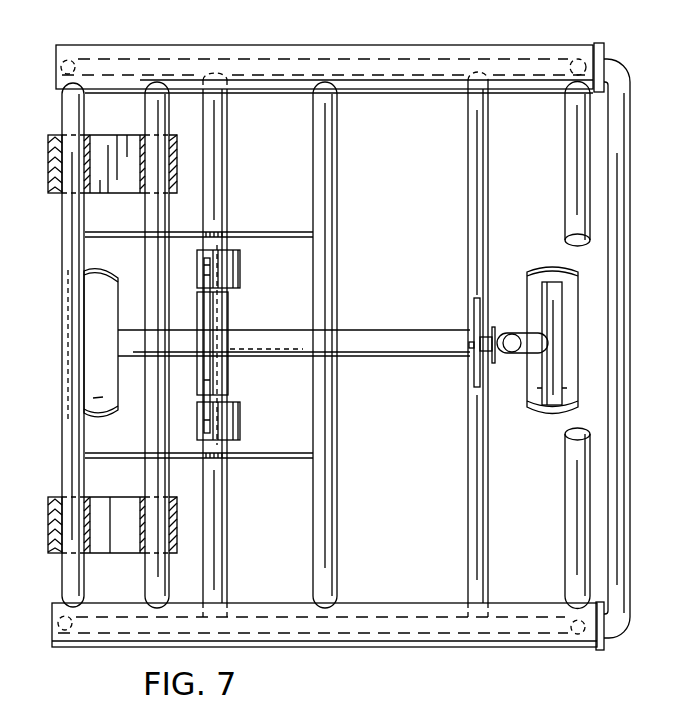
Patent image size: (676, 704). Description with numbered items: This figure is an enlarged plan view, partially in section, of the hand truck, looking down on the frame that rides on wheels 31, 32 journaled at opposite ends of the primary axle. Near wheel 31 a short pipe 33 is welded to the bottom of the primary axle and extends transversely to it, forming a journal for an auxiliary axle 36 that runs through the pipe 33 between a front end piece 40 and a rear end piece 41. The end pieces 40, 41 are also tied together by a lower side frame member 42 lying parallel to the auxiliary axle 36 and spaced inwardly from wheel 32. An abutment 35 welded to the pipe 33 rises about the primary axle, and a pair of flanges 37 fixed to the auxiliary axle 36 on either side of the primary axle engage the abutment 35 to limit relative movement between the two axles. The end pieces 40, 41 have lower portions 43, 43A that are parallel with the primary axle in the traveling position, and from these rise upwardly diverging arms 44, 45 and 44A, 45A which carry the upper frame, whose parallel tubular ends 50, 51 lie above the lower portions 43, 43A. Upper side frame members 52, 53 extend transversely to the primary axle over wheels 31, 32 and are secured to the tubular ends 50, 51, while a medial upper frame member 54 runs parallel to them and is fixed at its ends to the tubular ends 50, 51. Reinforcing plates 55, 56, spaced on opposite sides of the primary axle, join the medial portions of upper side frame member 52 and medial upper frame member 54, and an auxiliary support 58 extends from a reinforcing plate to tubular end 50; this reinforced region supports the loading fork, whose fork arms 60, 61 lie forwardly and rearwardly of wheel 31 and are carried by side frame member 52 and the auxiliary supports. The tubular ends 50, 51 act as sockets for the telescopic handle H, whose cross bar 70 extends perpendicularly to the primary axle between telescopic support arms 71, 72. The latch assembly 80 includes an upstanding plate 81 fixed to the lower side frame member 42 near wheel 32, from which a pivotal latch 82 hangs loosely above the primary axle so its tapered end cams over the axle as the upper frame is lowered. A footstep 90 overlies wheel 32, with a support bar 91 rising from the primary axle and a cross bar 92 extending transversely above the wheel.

The wheel 31 is at (116, 306).
The wheel 32 is at (533, 418).
The pipe 33 is at (218, 323).
The abutment 35 is at (204, 275).
The auxiliary axle 36 is at (227, 118).
The flanges 37 is at (242, 263).
The front end piece 40 is at (389, 612).
The rear end piece 41 is at (349, 60).
The lower side frame member 42 is at (468, 226).
The lower portion 43 is at (464, 639).
The lower portion 43A is at (204, 56).
The upwardly diverging arm 44 is at (63, 633).
The upwardly diverging arm 44A is at (68, 60).
The upwardly diverging arm 45 is at (571, 641).
The upwardly diverging arm 45A is at (578, 58).
The tubular end 50 is at (418, 644).
The tubular end 51 is at (430, 48).
The upper side frame member 52 is at (63, 248).
The upper side frame member 53 is at (568, 198).
The medial upper frame member 54 is at (333, 202).
The reinforcing plate 55 is at (263, 231).
The reinforcing plate 56 is at (148, 111).
The auxiliary support 58 is at (147, 574).
The fork arm 60 is at (48, 508).
The fork arm 61 is at (50, 150).
The cross bar 70 is at (627, 268).
The telescopic support arm 71 is at (604, 47).
The telescopic support arm 72 is at (605, 641).
The latch assembly 80 is at (474, 319).
The upstanding plate 81 is at (471, 367).
The pivotal latch 82 is at (492, 334).
The footstep 90 is at (560, 320).
The pin 91 is at (512, 352).
The cross bar 92 is at (560, 363).
The telescopic handle H is at (630, 399).